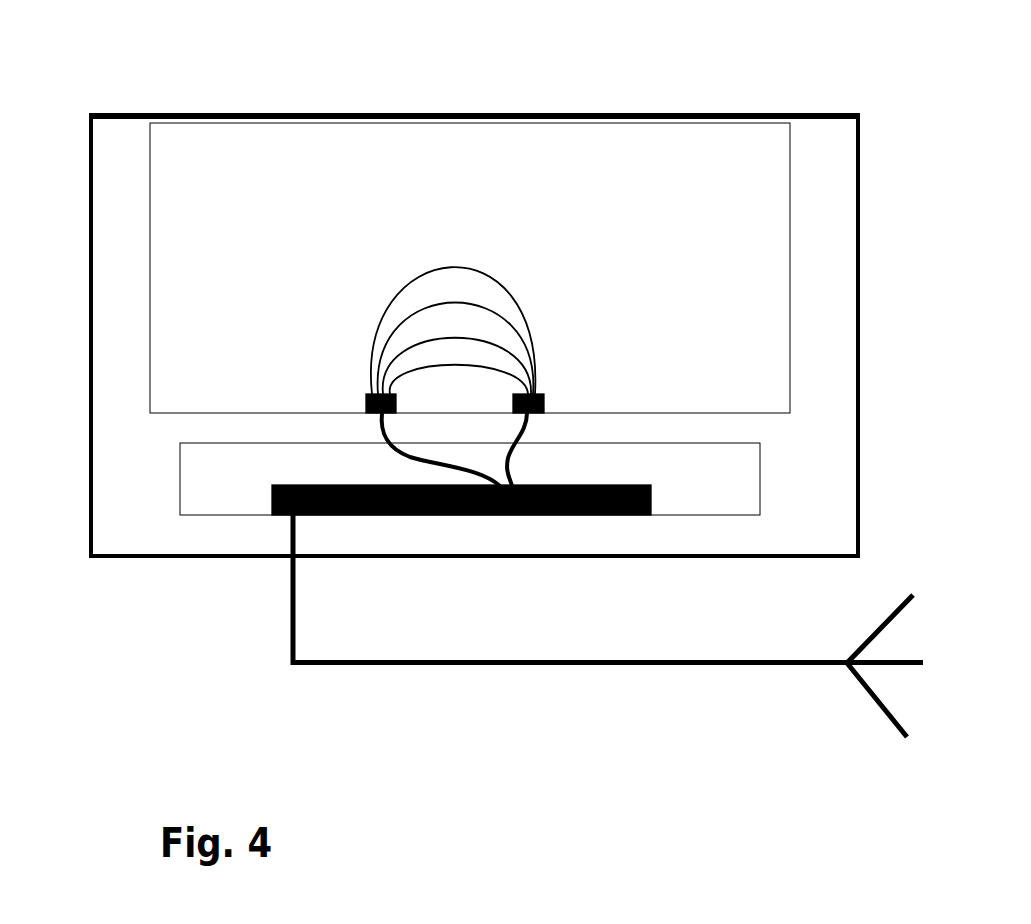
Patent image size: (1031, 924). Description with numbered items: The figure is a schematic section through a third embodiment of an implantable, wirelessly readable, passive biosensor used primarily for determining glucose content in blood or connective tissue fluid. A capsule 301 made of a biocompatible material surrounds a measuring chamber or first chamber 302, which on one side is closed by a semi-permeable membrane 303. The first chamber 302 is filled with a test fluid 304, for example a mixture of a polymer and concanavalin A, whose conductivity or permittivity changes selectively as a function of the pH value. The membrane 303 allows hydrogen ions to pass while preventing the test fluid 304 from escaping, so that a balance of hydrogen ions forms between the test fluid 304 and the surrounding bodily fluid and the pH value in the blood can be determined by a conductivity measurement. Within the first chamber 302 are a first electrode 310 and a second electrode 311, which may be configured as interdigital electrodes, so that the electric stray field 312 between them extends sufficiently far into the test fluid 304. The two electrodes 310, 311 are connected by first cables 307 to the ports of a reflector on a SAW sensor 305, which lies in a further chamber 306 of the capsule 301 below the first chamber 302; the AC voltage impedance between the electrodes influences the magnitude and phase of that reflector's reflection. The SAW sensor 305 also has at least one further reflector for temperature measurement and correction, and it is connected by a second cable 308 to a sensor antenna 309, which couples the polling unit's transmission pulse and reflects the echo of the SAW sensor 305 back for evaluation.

The capsule 301 is at (858, 173).
The first chamber 302 is at (259, 202).
The semi-permeable membrane 303 is at (172, 115).
The test fluid 304 is at (712, 143).
The SAW sensor 305 is at (317, 487).
The lower cavity 306 is at (259, 492).
The first cables 307 is at (413, 462).
The second cable 308 is at (518, 668).
The sensor antenna 309 is at (882, 708).
The first electrode 310 is at (367, 398).
The second electrode 311 is at (543, 398).
The electric stray field 312 is at (443, 272).